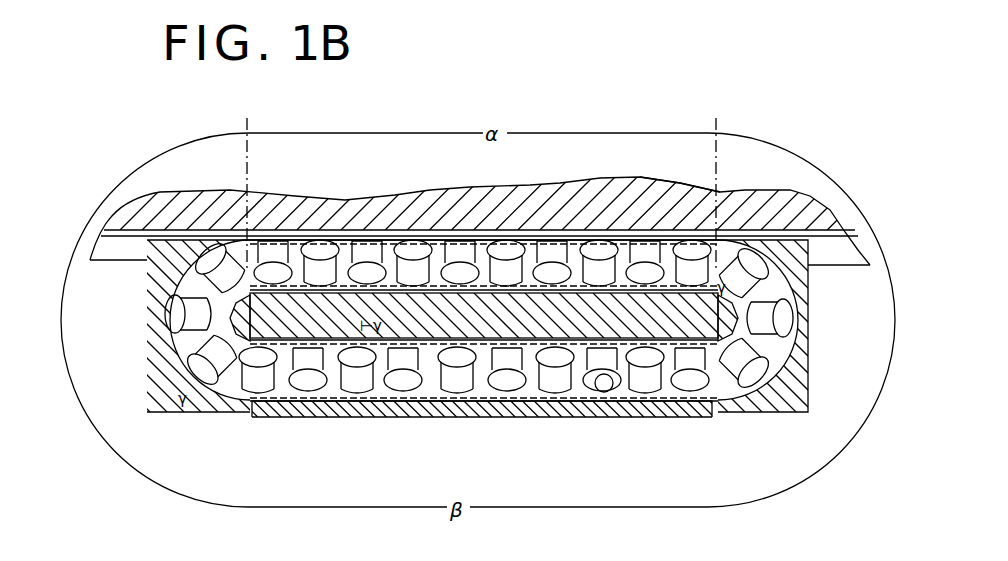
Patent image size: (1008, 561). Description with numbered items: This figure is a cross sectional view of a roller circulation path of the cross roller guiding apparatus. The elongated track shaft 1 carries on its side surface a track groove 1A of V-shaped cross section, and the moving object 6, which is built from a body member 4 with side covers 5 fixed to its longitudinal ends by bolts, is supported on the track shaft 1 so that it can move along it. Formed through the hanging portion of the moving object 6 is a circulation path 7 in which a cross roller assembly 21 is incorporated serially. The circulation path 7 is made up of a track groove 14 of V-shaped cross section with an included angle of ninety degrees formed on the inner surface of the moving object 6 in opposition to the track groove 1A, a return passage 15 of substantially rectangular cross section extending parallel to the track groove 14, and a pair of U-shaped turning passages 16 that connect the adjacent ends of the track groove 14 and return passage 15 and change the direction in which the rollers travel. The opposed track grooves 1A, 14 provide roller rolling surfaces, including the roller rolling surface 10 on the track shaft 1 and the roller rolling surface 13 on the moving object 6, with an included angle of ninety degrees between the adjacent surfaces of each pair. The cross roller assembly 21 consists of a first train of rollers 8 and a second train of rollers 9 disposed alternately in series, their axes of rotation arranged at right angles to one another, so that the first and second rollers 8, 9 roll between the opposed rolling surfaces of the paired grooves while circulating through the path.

The track shaft 1 is at (218, 203).
The track groove 1A is at (318, 268).
The body member 4 is at (355, 442).
The side cover 5 is at (147, 317).
The moving object 6 is at (492, 418).
The circulation path 7 is at (607, 398).
The first train of rollers 8 is at (306, 262).
The second train of rollers 9 is at (371, 250).
The roller rolling surface 10 is at (533, 243).
The roller rolling surface 13 is at (573, 290).
The track groove 14 is at (672, 190).
The return passage 15 is at (331, 396).
The turning passage 16 is at (183, 280).
The cross roller assembly 21 is at (437, 243).